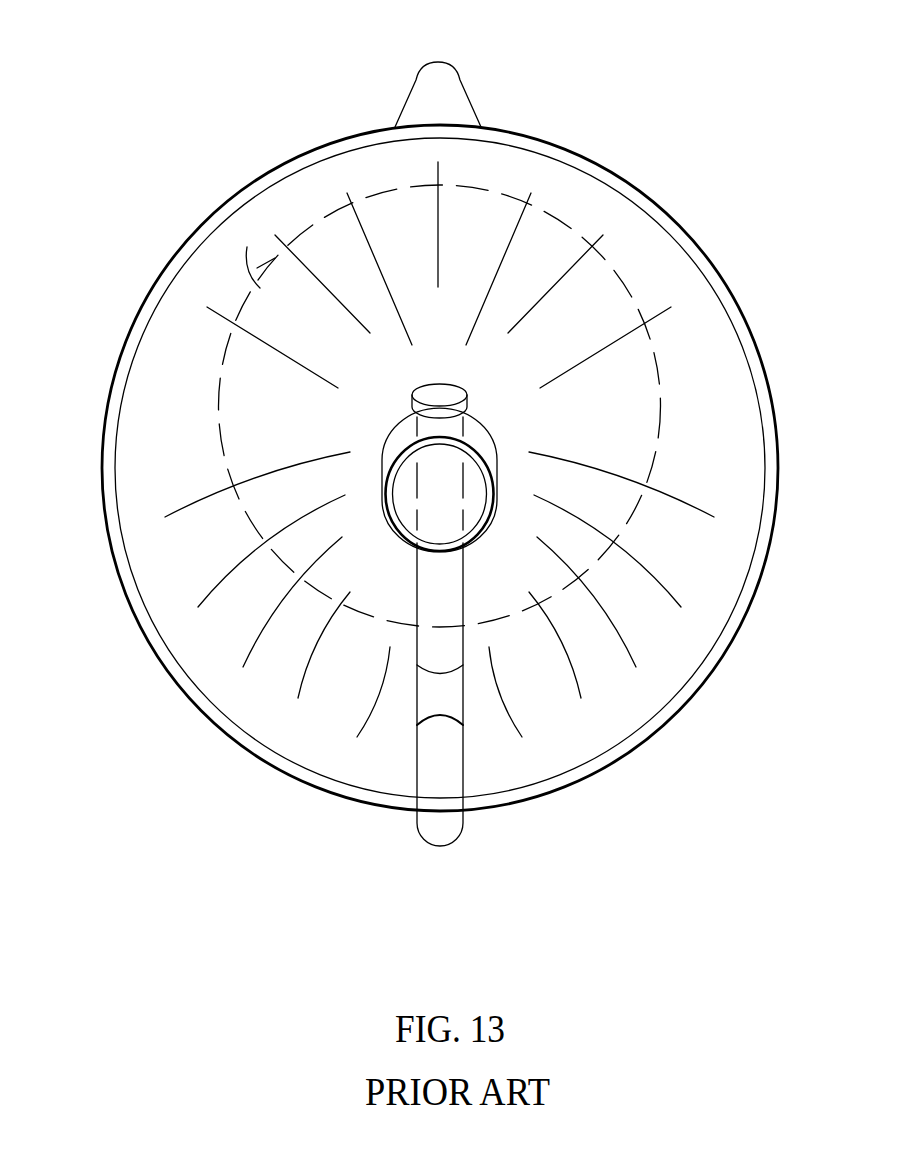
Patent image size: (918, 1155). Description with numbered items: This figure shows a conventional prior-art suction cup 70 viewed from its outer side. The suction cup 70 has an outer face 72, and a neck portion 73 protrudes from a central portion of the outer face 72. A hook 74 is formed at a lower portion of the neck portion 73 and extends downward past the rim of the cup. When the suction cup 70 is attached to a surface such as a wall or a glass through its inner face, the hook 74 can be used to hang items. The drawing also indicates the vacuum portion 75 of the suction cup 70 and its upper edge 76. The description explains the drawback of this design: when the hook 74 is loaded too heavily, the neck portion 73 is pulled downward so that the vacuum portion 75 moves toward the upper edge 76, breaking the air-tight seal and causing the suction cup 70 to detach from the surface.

The suction cup 70 is at (716, 688).
The outer face 72 is at (150, 583).
The neck portion 73 is at (478, 442).
The hook 74 is at (425, 830).
The vacuum portion 75 is at (232, 245).
The upper edge 76 is at (500, 127).